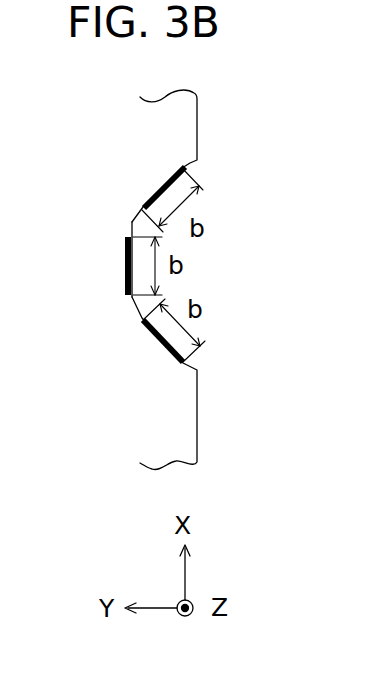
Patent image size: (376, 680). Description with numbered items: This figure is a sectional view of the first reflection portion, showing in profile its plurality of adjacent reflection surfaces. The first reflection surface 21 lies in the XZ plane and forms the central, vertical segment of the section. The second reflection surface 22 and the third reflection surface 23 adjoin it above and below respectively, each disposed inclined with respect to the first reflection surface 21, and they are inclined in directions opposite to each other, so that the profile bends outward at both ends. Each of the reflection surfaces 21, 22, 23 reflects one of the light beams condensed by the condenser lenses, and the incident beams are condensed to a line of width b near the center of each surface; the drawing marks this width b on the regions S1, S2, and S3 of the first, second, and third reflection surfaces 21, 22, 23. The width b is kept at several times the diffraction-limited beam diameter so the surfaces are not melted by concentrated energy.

The second reflection surface 22 is at (189, 163).
The second surface S2 is at (167, 186).
The first reflection surface 21 is at (132, 226).
The first surface S1 is at (126, 265).
The third surface S3 is at (157, 344).
The third reflection surface 23 is at (190, 369).